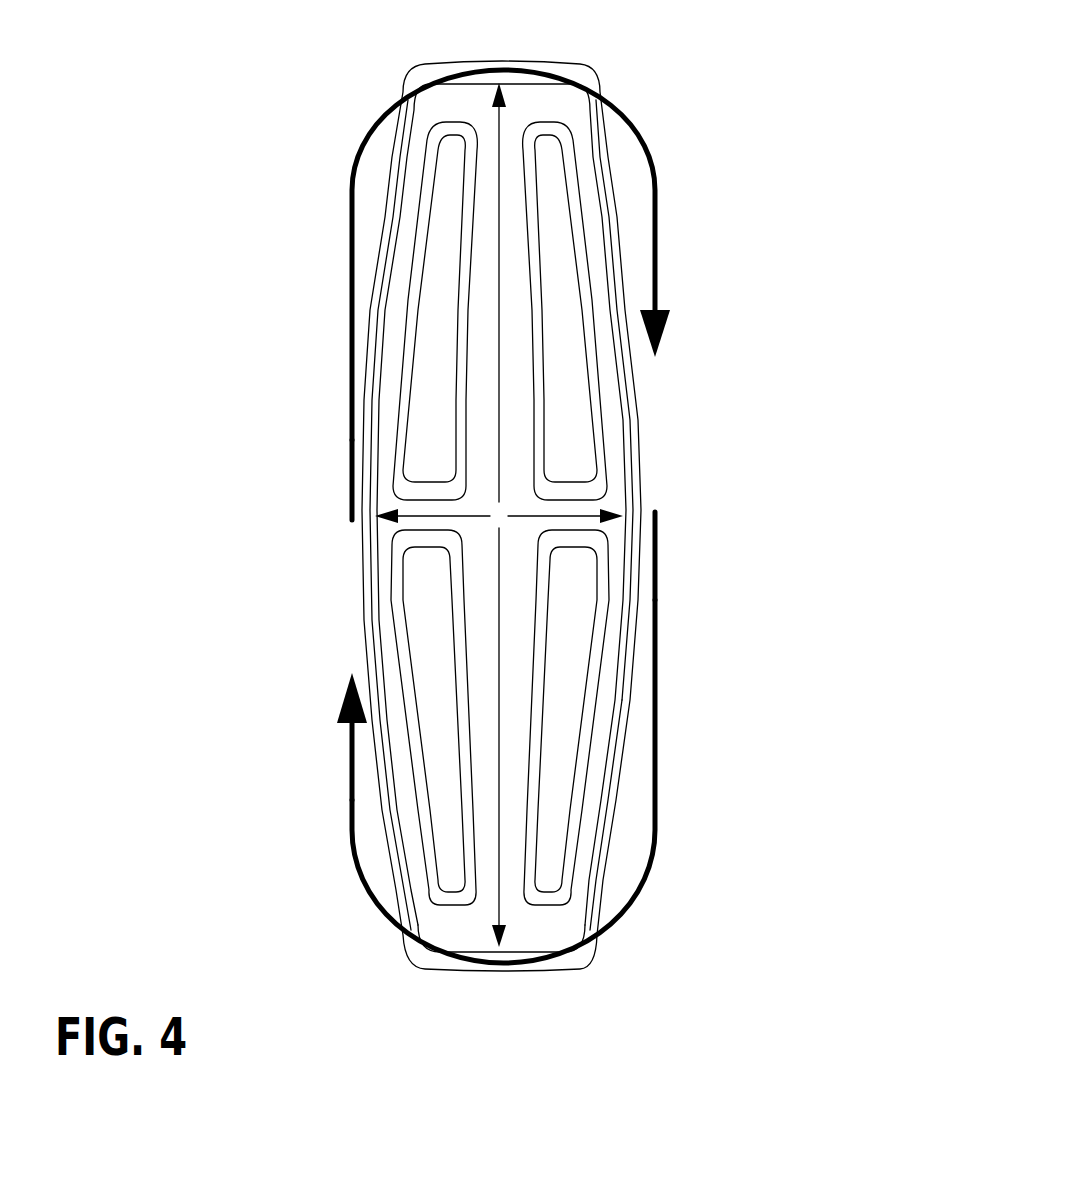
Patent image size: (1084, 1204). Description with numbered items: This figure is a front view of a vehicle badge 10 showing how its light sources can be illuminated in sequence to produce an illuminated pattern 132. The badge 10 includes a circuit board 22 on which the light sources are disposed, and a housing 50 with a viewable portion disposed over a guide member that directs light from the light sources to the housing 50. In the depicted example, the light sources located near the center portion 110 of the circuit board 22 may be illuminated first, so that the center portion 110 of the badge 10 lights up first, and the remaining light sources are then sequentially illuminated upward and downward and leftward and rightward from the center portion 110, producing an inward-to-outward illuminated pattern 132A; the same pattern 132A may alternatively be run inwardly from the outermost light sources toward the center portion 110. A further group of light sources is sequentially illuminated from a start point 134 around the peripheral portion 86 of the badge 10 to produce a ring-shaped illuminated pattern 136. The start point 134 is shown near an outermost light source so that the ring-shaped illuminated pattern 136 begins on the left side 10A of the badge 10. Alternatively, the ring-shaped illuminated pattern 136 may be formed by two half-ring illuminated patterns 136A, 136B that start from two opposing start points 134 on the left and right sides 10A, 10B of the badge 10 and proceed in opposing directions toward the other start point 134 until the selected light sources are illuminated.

The vehicle badge 10 is at (730, 105).
The left side of the badge 10A is at (387, 177).
The right side of the badge 10B is at (620, 213).
The circuit board 22 is at (567, 630).
The housing 50 is at (540, 927).
The peripheral portion 86 is at (620, 783).
The center portion 110 is at (503, 510).
The illuminated pattern 132 is at (655, 410).
The inward-to-outward illuminated pattern 132A is at (490, 243).
The start point 134 is at (360, 527).
The ring-shaped illuminated pattern 136 is at (342, 760).
The half-ring illuminated pattern 136A is at (345, 320).
The half-ring illuminated pattern 136B is at (350, 825).